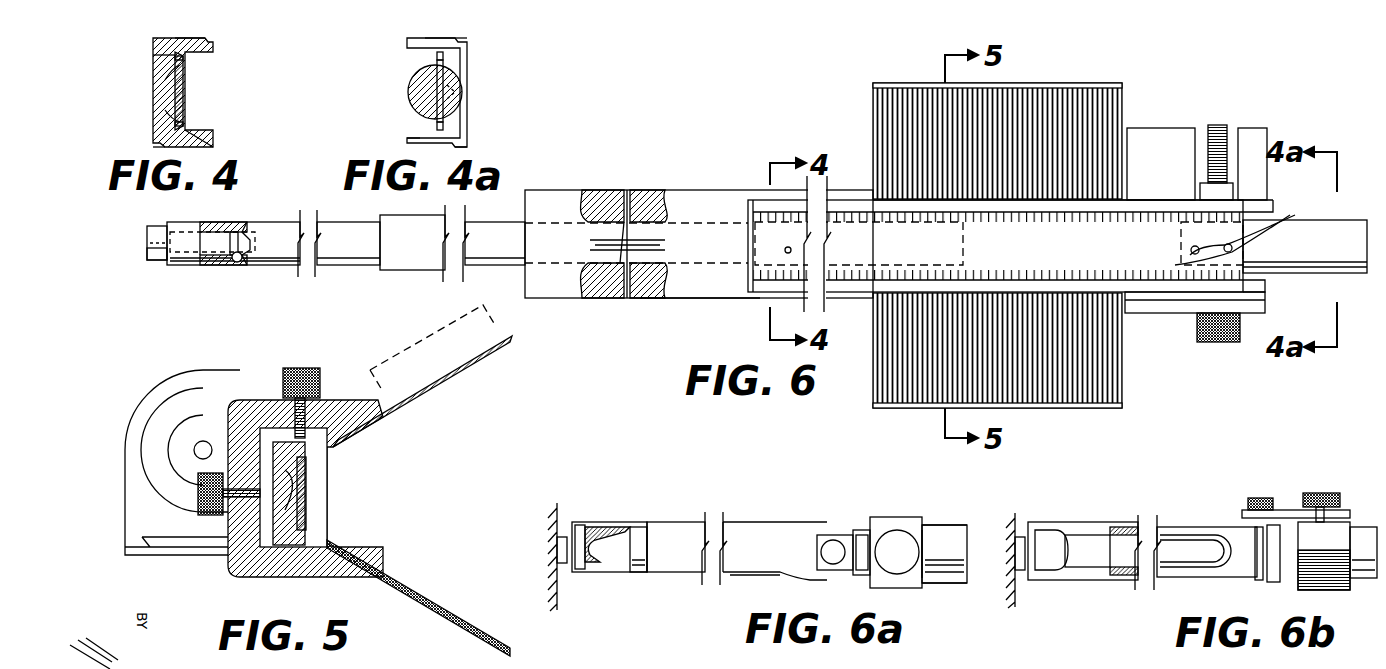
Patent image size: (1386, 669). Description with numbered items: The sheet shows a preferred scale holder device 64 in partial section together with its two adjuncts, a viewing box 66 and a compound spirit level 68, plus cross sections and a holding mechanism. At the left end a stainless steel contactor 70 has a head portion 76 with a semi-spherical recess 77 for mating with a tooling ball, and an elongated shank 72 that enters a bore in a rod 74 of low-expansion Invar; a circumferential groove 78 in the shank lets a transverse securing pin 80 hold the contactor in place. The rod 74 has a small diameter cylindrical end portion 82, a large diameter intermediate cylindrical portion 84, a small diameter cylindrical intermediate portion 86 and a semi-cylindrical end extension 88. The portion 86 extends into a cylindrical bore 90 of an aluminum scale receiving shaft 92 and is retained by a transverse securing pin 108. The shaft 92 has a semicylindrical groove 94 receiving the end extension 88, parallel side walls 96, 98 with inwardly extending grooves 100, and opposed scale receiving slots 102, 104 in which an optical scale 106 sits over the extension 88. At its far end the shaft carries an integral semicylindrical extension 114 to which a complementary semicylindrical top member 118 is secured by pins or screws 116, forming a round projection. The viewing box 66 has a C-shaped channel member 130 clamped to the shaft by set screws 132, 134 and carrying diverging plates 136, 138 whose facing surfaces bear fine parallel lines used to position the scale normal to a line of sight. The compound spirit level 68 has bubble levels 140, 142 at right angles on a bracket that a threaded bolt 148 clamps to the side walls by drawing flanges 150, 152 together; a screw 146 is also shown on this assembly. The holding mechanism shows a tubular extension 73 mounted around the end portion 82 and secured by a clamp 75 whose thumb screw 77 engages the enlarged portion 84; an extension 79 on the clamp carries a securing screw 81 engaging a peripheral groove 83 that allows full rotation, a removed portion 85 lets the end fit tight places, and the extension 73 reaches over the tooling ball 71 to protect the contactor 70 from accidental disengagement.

In FIG. 6, the scale holder device 64 is at (555, 200).
In FIG. 6, the viewing box 66 is at (1125, 103).
In FIG. 5, the viewing box 66 is at (258, 582).
In FIG. 6, the compound spirit level 68 is at (1268, 130).
In FIG. 5, the compound spirit level 68 is at (132, 405).
In FIG. 6, the contactor 70 is at (158, 266).
In FIG. 6A, the contactor 70 is at (620, 572).
In FIG. 6B, the contactor 70 is at (1075, 577).
In FIG. 6A, the tooling ball 71 is at (598, 527).
In FIG. 6B, the tooling ball 71 is at (1040, 527).
In FIG. 6, the shank 72 is at (190, 252).
In FIG. 6A, the tubular extension 73 is at (752, 530).
In FIG. 6B, the tubular extension 73 is at (1235, 530).
In FIG. 6, the rod 74 is at (425, 270).
In FIG. 6A, the clamp 75 is at (915, 530).
In FIG. 6B, the clamp 75 is at (1305, 590).
In FIG. 6, the head portion 76 is at (148, 255).
In FIG. 6, the thumb screw 77 is at (150, 240).
In FIG. 6A, the thumb screw 77 is at (895, 498).
In FIG. 6B, the thumb screw 77 is at (1320, 495).
In FIG. 6, the circumferential groove 78 is at (240, 225).
In FIG. 6A, the extension 79 is at (850, 575).
In FIG. 6B, the extension 79 is at (1350, 510).
In FIG. 6, the securing pin 80 is at (237, 262).
In FIG. 6A, the securing screw 81 is at (828, 550).
In FIG. 6B, the securing screw 81 is at (1265, 498).
In FIG. 6, the small diameter cylindrical end portion 82 is at (360, 258).
In FIG. 6A, the small diameter cylindrical end portion 82 is at (638, 572).
In FIG. 6B, the small diameter cylindrical end portion 82 is at (1105, 575).
In FIG. 6B, the peripheral groove 83 is at (1260, 582).
In FIG. 6, the large diameter intermediate cylindrical portion 84 is at (480, 258).
In FIG. 6A, the large diameter intermediate cylindrical portion 84 is at (945, 530).
In FIG. 6B, the large diameter intermediate cylindrical portion 84 is at (1370, 578).
In FIG. 6A, the removed portion 85 is at (765, 578).
In FIG. 6B, the removed portion 85 is at (1200, 575).
In FIG. 6, the small diameter cylindrical intermediate portion 86 is at (595, 300).
In FIG. 4, the semi-cylindrical end extension 88 is at (168, 72).
In FIG. 6, the cylindrical bore 90 is at (640, 195).
In FIG. 4, the scale receiving shaft 92 is at (150, 97).
In FIG. 4A, the scale receiving shaft 92 is at (470, 55).
In FIG. 6, the scale receiving shaft 92 is at (690, 300).
In FIG. 4, the semicylindrical groove 94 is at (162, 85).
In FIG. 4, the side wall 96 is at (190, 152).
In FIG. 4A, the side wall 96 is at (412, 148).
In FIG. 4A, the side wall 98 is at (428, 33).
In FIG. 4, the inwardly extending grooves 100 is at (182, 38).
In FIG. 4A, the inwardly extending grooves 100 is at (460, 40).
In FIG. 4, the scale receiving slot 102 is at (185, 56).
In FIG. 4A, the scale receiving slot 102 is at (432, 56).
In FIG. 4, the scale receiving slot 104 is at (185, 124).
In FIG. 4A, the scale receiving slot 104 is at (437, 128).
In FIG. 4, the optical scale 106 is at (185, 92).
In FIG. 6, the optical scale 106 is at (752, 262).
In FIG. 6, the securing pin 108 is at (618, 300).
In FIG. 4A, the semicylindrical extension 114 is at (445, 75).
In FIG. 4A, the pins or screws 116 is at (452, 90).
In FIG. 6, the pins or screws 116 is at (1250, 230).
In FIG. 4A, the semicylindrical top member 118 is at (408, 92).
In FIG. 6, the semicylindrical top member 118 is at (1330, 265).
In FIG. 5, the C-shaped channel member 130 is at (285, 572).
In FIG. 5, the set screw 132 is at (198, 508).
In FIG. 5, the set screw 134 is at (302, 368).
In FIG. 5, the diverging plate 136 is at (455, 620).
In FIG. 5, the diverging plate 138 is at (495, 340).
In FIG. 5, the spirit level 140 is at (180, 548).
In FIG. 5, the spirit level 142 is at (194, 450).
In FIG. 6, the screw 146 is at (1220, 125).
In FIG. 6, the threaded bolt 148 is at (1220, 342).
In FIG. 6, the flange 150 is at (1185, 300).
In FIG. 6, the flange 152 is at (1205, 183).